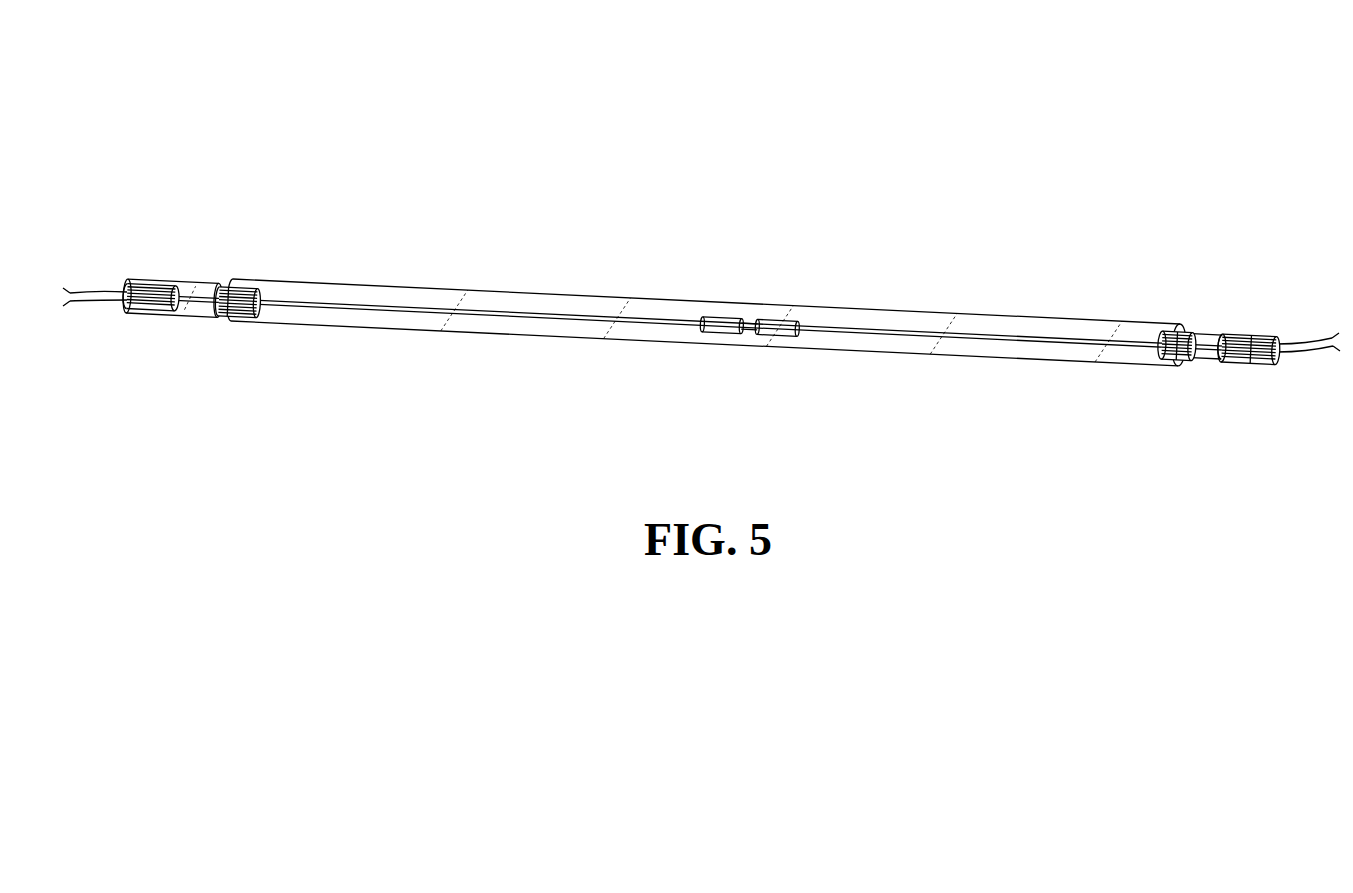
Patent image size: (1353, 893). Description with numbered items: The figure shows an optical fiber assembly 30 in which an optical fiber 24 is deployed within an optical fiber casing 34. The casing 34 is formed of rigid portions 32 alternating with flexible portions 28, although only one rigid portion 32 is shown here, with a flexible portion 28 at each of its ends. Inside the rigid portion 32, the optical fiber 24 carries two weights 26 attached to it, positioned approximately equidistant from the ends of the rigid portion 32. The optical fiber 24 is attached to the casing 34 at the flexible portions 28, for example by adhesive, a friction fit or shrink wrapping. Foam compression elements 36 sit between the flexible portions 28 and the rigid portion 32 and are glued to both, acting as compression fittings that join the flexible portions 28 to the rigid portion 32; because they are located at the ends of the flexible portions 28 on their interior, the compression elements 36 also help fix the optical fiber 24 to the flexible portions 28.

The optical fiber 24 is at (512, 312).
The weights 26 is at (766, 324).
The flexible portions 28 is at (190, 284).
The optical fiber assembly 30 is at (972, 123).
The rigid portions 32 is at (567, 293).
The optical fiber casing 34 is at (362, 278).
The compression elements 36 is at (229, 300).